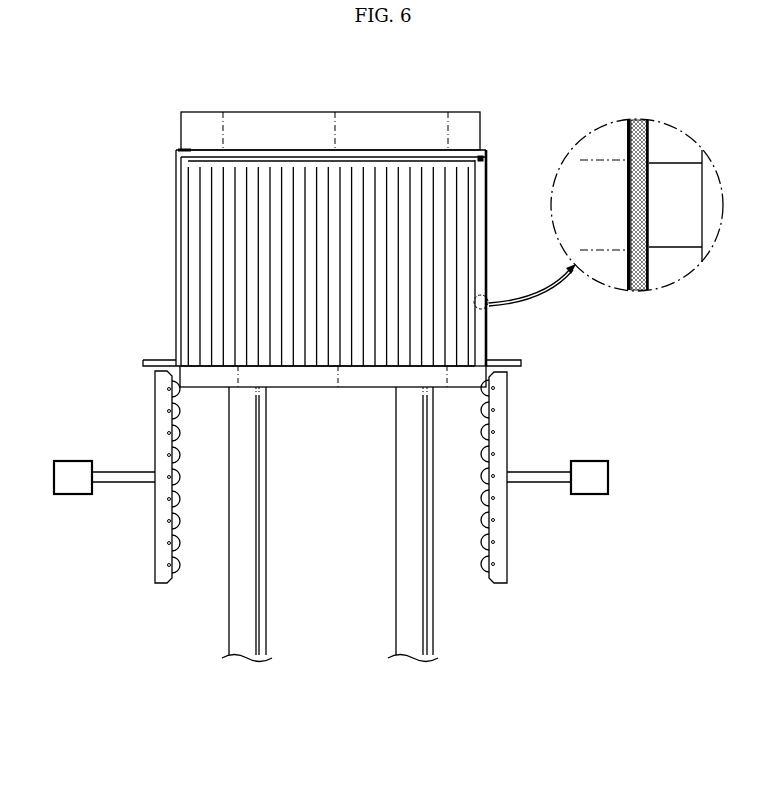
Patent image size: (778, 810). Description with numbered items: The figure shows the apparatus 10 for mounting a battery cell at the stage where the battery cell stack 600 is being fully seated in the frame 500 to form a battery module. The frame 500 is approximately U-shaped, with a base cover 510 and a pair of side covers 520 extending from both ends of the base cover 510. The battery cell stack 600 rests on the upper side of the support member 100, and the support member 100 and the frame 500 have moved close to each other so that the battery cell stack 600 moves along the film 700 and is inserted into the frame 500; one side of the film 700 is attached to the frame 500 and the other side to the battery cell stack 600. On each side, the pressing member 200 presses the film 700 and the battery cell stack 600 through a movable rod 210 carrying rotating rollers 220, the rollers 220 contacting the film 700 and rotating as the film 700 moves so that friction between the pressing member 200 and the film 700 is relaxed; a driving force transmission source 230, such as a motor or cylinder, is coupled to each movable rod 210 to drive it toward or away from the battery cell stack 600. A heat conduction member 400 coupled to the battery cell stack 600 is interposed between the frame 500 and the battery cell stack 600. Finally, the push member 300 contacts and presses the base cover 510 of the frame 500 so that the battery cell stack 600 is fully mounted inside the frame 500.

The apparatus for mounting a battery cell 10 is at (190, 698).
The support member 100 is at (203, 387).
The pressing member 200 is at (326, 481).
The movable rod 210 is at (155, 512).
The rotating roller 220 is at (176, 541).
The driving force transmission source 230 is at (72, 461).
The push member 300 is at (396, 112).
The heat conduction member 400 is at (485, 157).
The frame 500 is at (154, 116).
The base cover 510 is at (183, 150).
The side covers 520 is at (176, 177).
The battery cell stack 600 is at (358, 352).
The film 700 is at (176, 250).